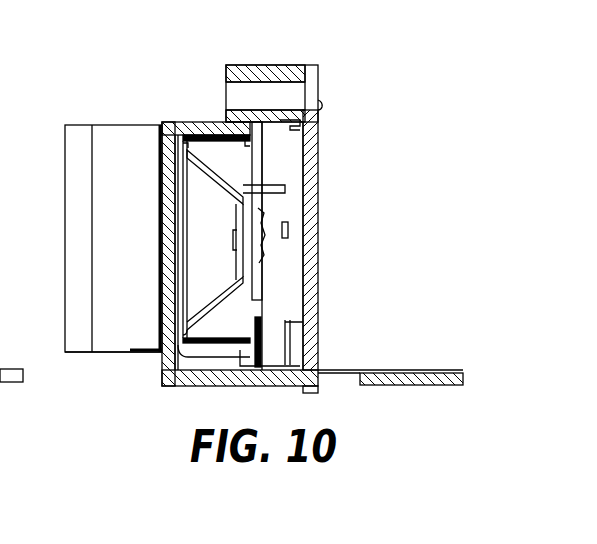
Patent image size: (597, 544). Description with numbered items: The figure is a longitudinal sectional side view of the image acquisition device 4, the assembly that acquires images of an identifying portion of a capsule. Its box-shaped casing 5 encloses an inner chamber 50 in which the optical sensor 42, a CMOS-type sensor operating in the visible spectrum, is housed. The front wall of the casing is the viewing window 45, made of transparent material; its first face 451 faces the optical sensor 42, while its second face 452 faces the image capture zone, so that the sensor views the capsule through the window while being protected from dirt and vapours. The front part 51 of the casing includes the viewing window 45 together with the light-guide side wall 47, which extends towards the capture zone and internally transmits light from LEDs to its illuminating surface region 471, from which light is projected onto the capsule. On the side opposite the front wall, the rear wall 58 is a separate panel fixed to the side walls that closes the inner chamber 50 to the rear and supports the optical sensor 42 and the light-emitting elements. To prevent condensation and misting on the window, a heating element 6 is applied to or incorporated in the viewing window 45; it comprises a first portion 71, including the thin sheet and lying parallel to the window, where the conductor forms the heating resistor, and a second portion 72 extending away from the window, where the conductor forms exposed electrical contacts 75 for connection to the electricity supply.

The image acquisition device 4 is at (342, 81).
The box-shaped casing 5 is at (332, 292).
The heating element 6 is at (170, 185).
The optical sensor 42 is at (270, 240).
The viewing window 45 is at (151, 206).
The side wall 47 is at (110, 305).
The inner chamber 50 is at (218, 251).
The front part 51 is at (190, 120).
The rear wall 58 is at (315, 148).
The first portion 71 is at (177, 250).
The second portion 72 is at (340, 370).
The electrical contacts 75 is at (398, 381).
The first face 451 is at (176, 210).
The second face 452 is at (160, 232).
The illuminating surface region 471 is at (78, 150).